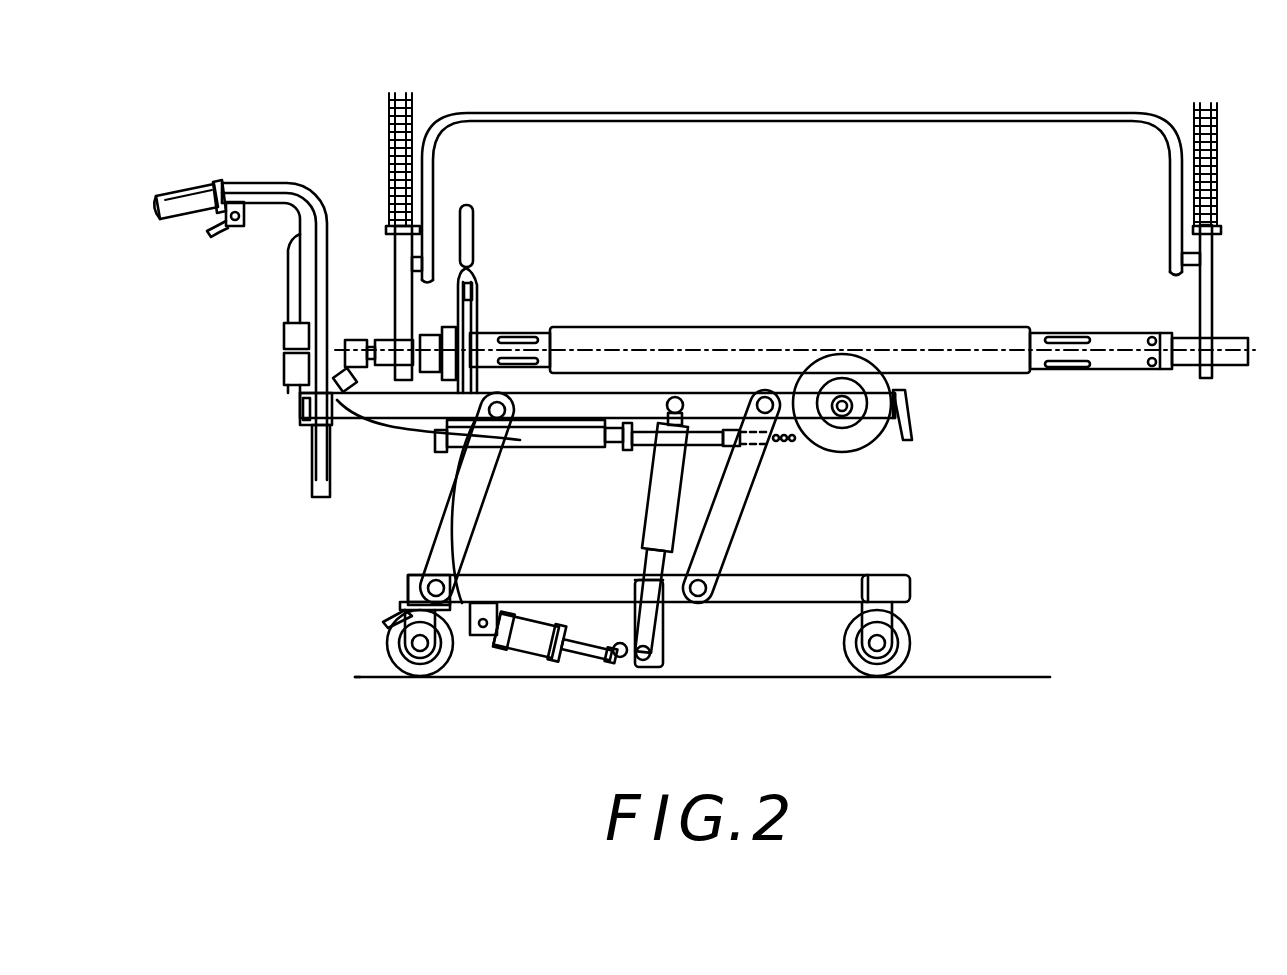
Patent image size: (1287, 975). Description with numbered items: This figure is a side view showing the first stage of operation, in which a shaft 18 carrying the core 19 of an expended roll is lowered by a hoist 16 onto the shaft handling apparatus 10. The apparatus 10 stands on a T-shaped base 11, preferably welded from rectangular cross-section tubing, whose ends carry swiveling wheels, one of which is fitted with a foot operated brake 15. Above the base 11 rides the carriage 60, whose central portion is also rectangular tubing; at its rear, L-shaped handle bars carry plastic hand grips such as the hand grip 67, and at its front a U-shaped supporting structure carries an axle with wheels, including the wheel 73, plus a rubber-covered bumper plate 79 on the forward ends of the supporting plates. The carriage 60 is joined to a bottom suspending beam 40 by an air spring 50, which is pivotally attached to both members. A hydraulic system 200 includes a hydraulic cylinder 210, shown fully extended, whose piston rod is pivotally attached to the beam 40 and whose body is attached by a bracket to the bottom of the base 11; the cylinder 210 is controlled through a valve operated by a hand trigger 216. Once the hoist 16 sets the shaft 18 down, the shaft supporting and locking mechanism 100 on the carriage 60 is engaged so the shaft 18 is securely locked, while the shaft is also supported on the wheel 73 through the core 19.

The shaft handling apparatus 10 is at (302, 540).
The T-shaped base 11 is at (784, 592).
The foot operated brake 15 is at (385, 620).
The hoist 16 is at (1175, 258).
The shaft 18 is at (1108, 338).
The core of an expended roll 19 is at (723, 345).
The bottom suspending beam 40 is at (758, 633).
The air spring 50 is at (665, 493).
The carriage 60 is at (945, 448).
The plastic hand grip 67 is at (187, 196).
The wheel 73 is at (838, 365).
The bumper plate 79 is at (912, 412).
The shaft supporting and locking mechanism 100 is at (572, 240).
The hydraulic system 200 is at (565, 667).
The hydraulic cylinder 210 is at (527, 636).
The trigger 216 is at (219, 229).